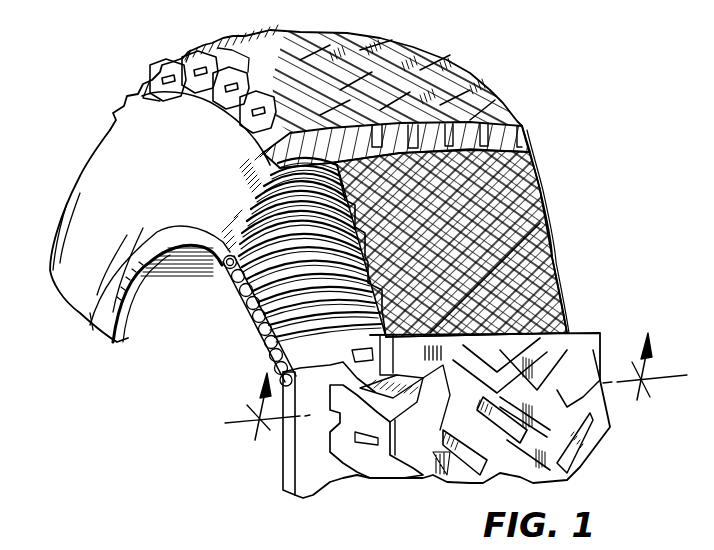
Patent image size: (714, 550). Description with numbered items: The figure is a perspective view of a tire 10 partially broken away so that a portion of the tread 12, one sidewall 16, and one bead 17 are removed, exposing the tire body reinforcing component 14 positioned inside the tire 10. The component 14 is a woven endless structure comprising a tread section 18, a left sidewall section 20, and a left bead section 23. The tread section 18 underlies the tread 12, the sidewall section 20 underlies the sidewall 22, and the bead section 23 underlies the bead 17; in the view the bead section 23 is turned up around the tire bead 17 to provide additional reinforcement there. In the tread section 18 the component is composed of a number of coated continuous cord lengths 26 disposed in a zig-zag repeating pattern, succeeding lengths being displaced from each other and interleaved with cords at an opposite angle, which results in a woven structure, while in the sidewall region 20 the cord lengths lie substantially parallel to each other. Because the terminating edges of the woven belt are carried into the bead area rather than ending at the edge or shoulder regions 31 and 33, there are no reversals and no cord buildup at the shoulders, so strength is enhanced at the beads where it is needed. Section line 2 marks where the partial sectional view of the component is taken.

The tire 10 is at (566, 155).
The tread 12 is at (518, 138).
The tire body reinforcing component 14 is at (505, 190).
The sidewall 16 is at (194, 180).
The bead 17 is at (178, 237).
The tread section 18 is at (533, 240).
The left sidewall section 20 is at (273, 350).
The sidewall 22 is at (136, 175).
The left bead section 23 is at (247, 306).
The coated continuous cord lengths 26 is at (513, 295).
The shoulder region 31 is at (276, 164).
The shoulder region 33 is at (533, 208).
The section line of FIG. 2 is at (456, 400).